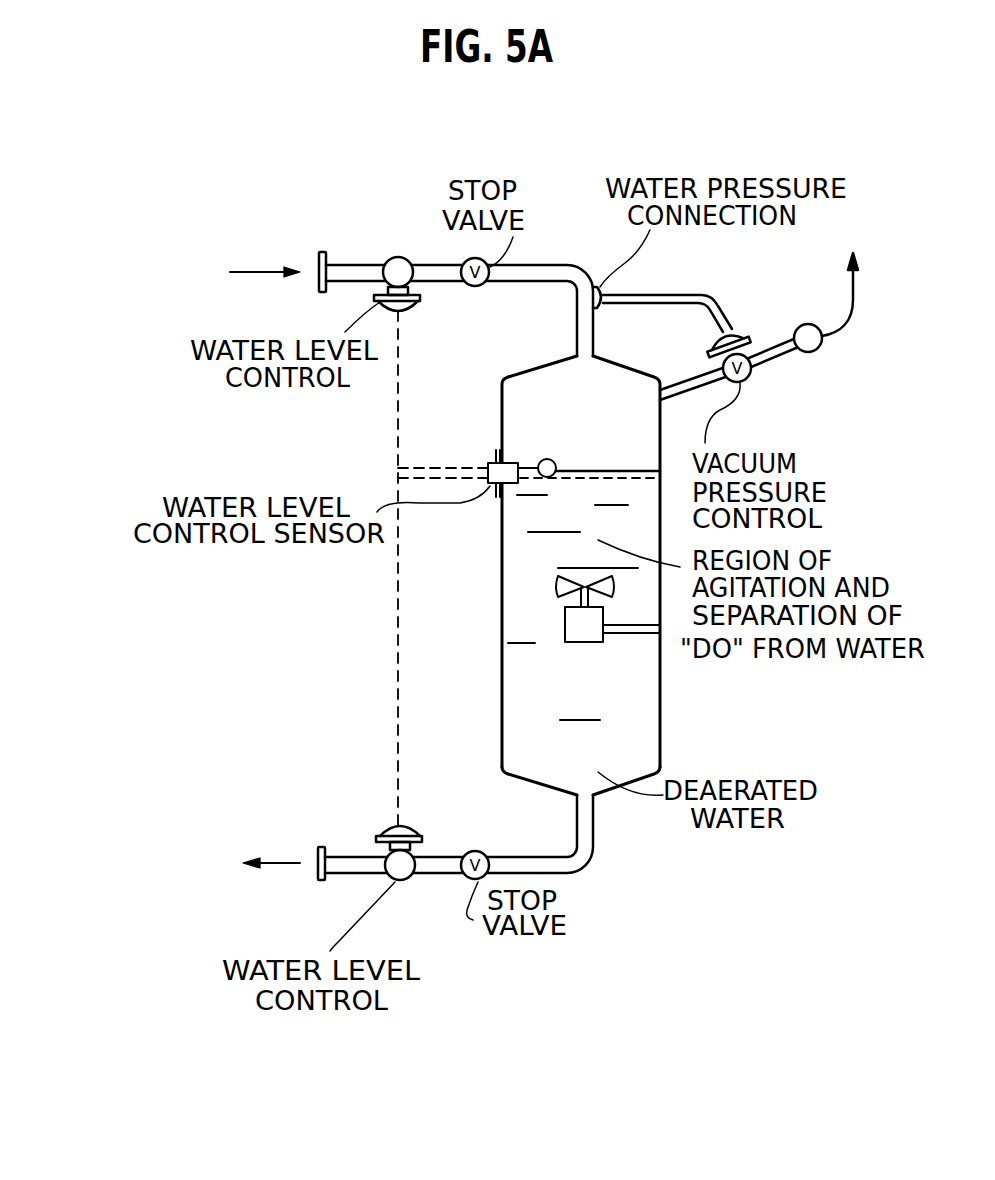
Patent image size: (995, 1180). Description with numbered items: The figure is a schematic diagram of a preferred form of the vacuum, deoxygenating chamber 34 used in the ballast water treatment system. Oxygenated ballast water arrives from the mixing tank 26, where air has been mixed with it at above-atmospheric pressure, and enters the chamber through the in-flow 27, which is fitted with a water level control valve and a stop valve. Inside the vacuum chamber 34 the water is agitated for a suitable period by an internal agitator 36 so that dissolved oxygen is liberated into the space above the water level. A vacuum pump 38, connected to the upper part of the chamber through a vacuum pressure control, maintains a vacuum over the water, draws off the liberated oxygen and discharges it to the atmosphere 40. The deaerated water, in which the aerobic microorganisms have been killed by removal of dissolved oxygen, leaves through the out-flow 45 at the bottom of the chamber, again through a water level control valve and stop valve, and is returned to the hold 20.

The hold 20 is at (243, 863).
The mixing tank 26 is at (275, 268).
The in-flow 27 is at (347, 263).
The vacuum chamber 34 is at (488, 568).
The internal agitator 36 is at (584, 627).
The vacuum pump 38 is at (790, 353).
The atmosphere 40 is at (867, 248).
The out-flow 45 is at (346, 855).